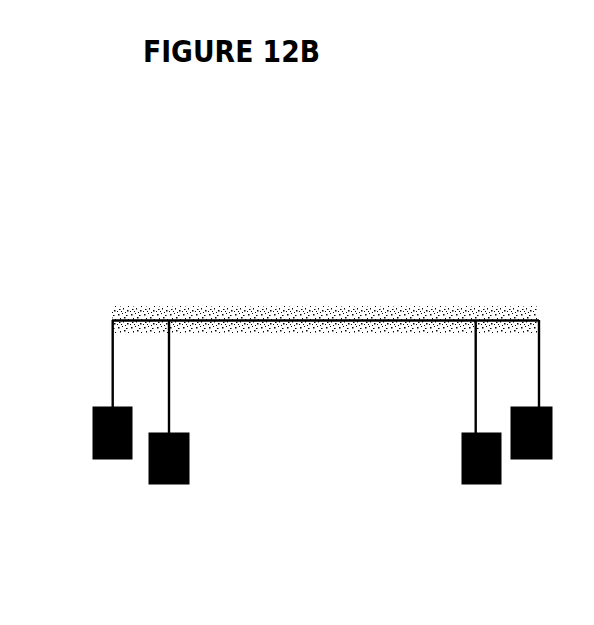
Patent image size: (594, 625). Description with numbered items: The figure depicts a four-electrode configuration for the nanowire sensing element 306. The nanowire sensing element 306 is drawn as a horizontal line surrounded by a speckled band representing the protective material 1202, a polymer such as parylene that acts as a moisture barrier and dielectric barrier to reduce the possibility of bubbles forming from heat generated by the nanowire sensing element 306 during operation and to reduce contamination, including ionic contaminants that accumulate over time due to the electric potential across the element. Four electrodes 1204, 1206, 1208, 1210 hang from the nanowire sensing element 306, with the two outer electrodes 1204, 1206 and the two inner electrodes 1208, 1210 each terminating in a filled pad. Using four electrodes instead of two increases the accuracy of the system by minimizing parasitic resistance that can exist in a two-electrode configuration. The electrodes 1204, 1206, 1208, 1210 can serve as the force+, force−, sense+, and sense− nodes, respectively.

The nanowire sensing element 306 is at (325, 283).
The protective material 1202 is at (289, 334).
The electrode 1204 is at (116, 340).
The electrode 1206 is at (541, 340).
The electrode 1208 is at (166, 427).
The electrode 1210 is at (479, 427).